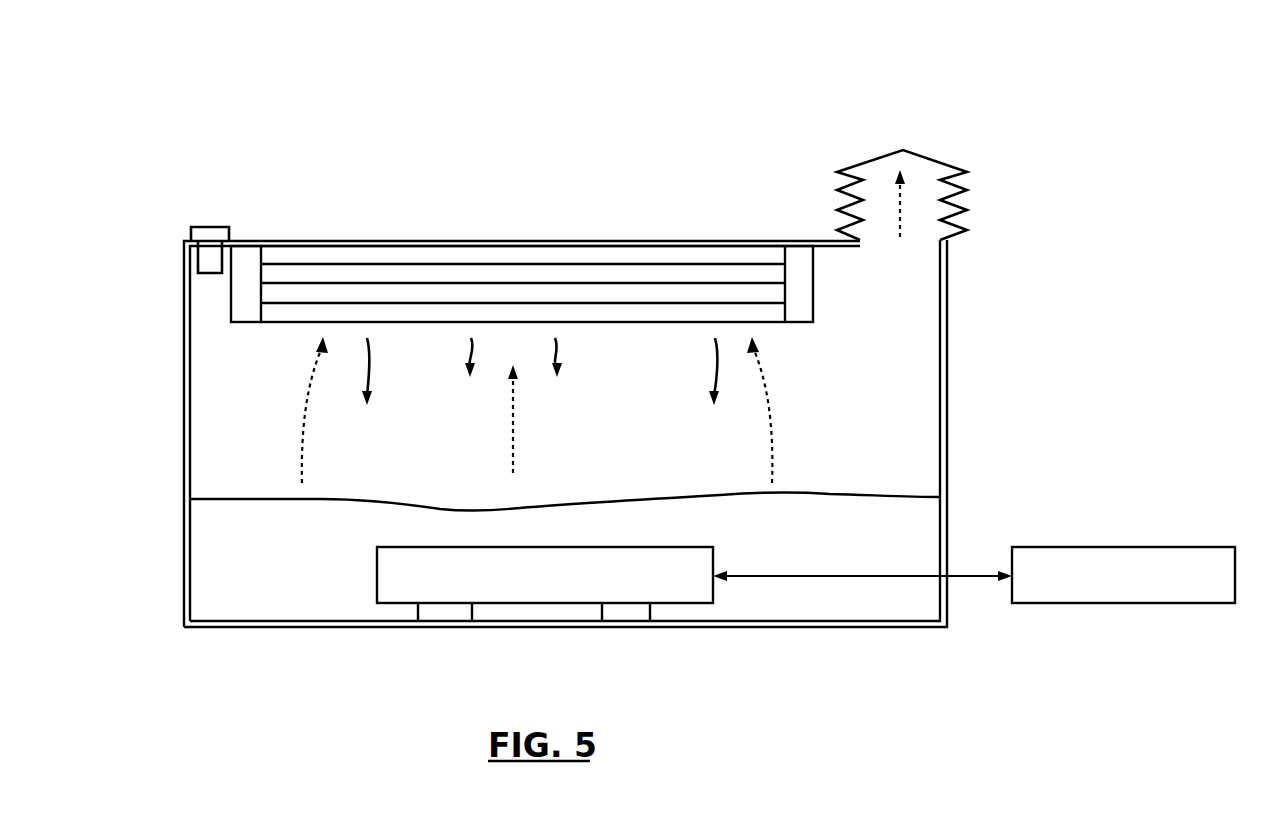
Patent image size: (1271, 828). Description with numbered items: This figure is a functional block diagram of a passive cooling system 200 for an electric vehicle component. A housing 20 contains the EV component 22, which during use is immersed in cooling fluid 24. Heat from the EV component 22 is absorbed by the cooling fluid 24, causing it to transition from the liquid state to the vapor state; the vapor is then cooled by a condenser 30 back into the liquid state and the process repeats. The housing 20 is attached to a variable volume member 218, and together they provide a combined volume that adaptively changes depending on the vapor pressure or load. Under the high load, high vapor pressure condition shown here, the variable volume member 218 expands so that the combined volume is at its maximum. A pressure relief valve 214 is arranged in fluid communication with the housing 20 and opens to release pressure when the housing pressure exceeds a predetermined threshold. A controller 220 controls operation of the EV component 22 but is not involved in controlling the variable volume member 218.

The passive cooling system 200 is at (147, 115).
The housing 20 is at (184, 366).
The cooling fluid 24 is at (262, 498).
The condenser 30 is at (606, 323).
The pressure relief valve 214 is at (213, 273).
The variable volume member 218 is at (835, 210).
The EV component 22 is at (514, 604).
The controller 220 is at (1109, 606).